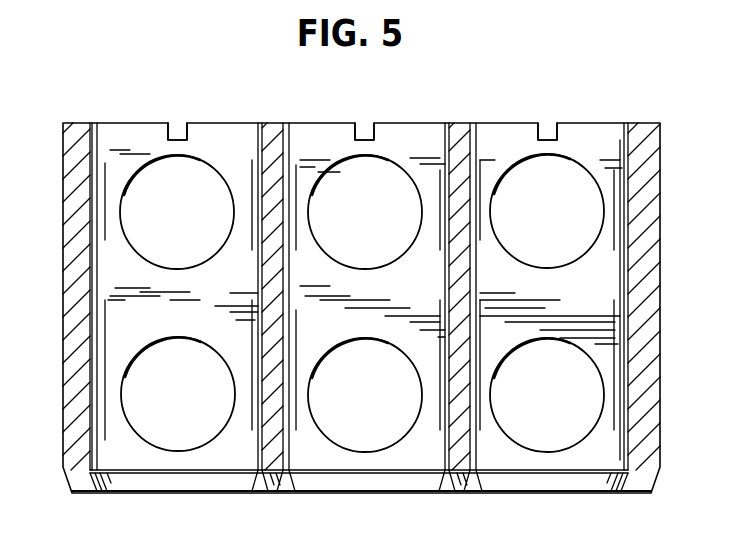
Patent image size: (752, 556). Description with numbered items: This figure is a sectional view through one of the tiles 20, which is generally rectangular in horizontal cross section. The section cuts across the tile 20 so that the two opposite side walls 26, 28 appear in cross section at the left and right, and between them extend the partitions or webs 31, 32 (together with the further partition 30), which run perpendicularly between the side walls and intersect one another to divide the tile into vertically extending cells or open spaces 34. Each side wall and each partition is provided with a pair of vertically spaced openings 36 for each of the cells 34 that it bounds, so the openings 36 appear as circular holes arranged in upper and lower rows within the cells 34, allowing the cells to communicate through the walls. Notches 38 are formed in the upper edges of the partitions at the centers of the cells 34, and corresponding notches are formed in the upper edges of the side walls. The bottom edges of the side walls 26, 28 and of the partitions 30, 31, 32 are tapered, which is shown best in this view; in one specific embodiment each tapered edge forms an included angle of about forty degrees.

The tile 20 is at (596, 123).
The side wall 26 is at (72, 292).
The side wall 28 is at (651, 285).
The partition 30 is at (155, 478).
The partition 31 is at (428, 134).
The partition 32 is at (262, 292).
The cell 34 is at (236, 132).
The opening 36 is at (126, 188).
The notch 38 is at (178, 127).